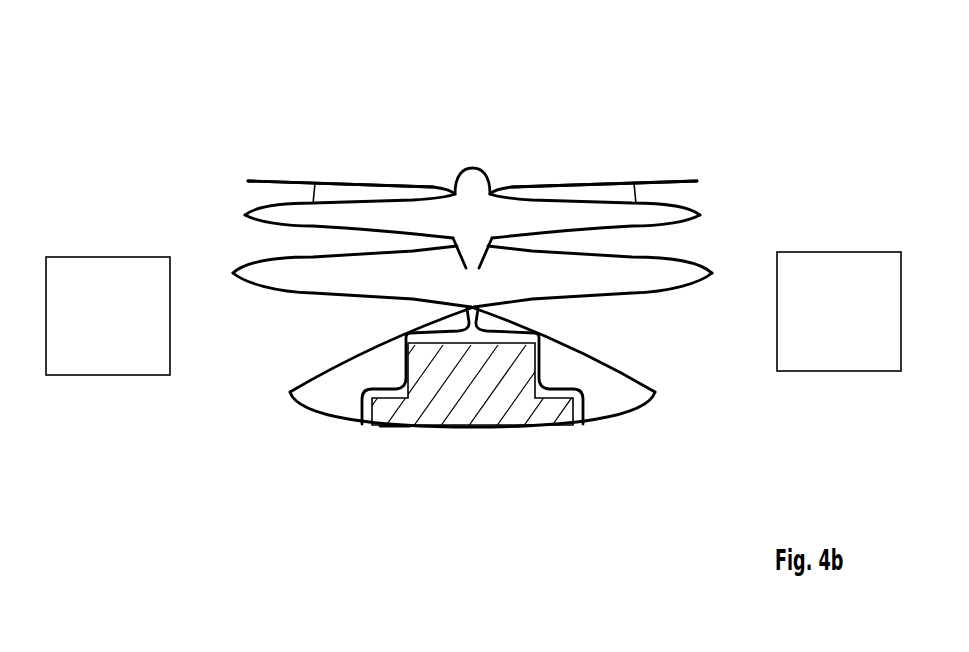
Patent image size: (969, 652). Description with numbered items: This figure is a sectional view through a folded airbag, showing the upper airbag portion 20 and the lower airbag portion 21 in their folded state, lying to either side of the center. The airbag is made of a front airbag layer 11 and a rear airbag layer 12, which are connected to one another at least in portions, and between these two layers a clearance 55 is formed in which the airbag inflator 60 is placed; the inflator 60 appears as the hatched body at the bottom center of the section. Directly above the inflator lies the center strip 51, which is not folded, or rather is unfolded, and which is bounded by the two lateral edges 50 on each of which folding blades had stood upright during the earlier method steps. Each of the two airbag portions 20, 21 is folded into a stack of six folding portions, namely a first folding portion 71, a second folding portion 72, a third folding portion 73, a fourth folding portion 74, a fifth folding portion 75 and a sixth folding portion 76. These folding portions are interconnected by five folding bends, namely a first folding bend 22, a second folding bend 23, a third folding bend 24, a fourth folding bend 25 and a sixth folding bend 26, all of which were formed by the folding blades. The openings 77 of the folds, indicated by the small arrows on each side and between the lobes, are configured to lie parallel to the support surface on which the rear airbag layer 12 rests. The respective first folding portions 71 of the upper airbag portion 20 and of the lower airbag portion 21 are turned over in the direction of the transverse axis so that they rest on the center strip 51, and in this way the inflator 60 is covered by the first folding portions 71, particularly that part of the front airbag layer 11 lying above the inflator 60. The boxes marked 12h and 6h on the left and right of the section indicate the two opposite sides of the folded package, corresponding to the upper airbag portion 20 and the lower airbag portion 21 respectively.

The front airbag layer 11 is at (389, 380).
The rear airbag layer 12 is at (393, 427).
The 12 o'clock position 12h is at (108, 316).
The 6 o'clock position 6h is at (839, 311).
The upper airbag portion 20 is at (351, 93).
The lower airbag portion 21 is at (598, 93).
The first folding bend 22 is at (467, 306).
The second folding bend 23 is at (232, 274).
The third folding bend 24 is at (472, 268).
The fourth folding bend 25 is at (246, 215).
The sixth folding bend 26 is at (472, 168).
The lateral edges 50 is at (296, 412).
The center strip 51 is at (460, 313).
The clearance 55 is at (551, 394).
The airbag inflator 60 is at (469, 402).
The first folding portion 71 is at (324, 361).
The second folding portion 72 is at (365, 290).
The third folding portion 73 is at (375, 252).
The fourth folding portion 74 is at (351, 232).
The fifth folding portion 75 is at (315, 183).
The sixth folding portion 76 is at (265, 180).
The openings 77 is at (271, 192).